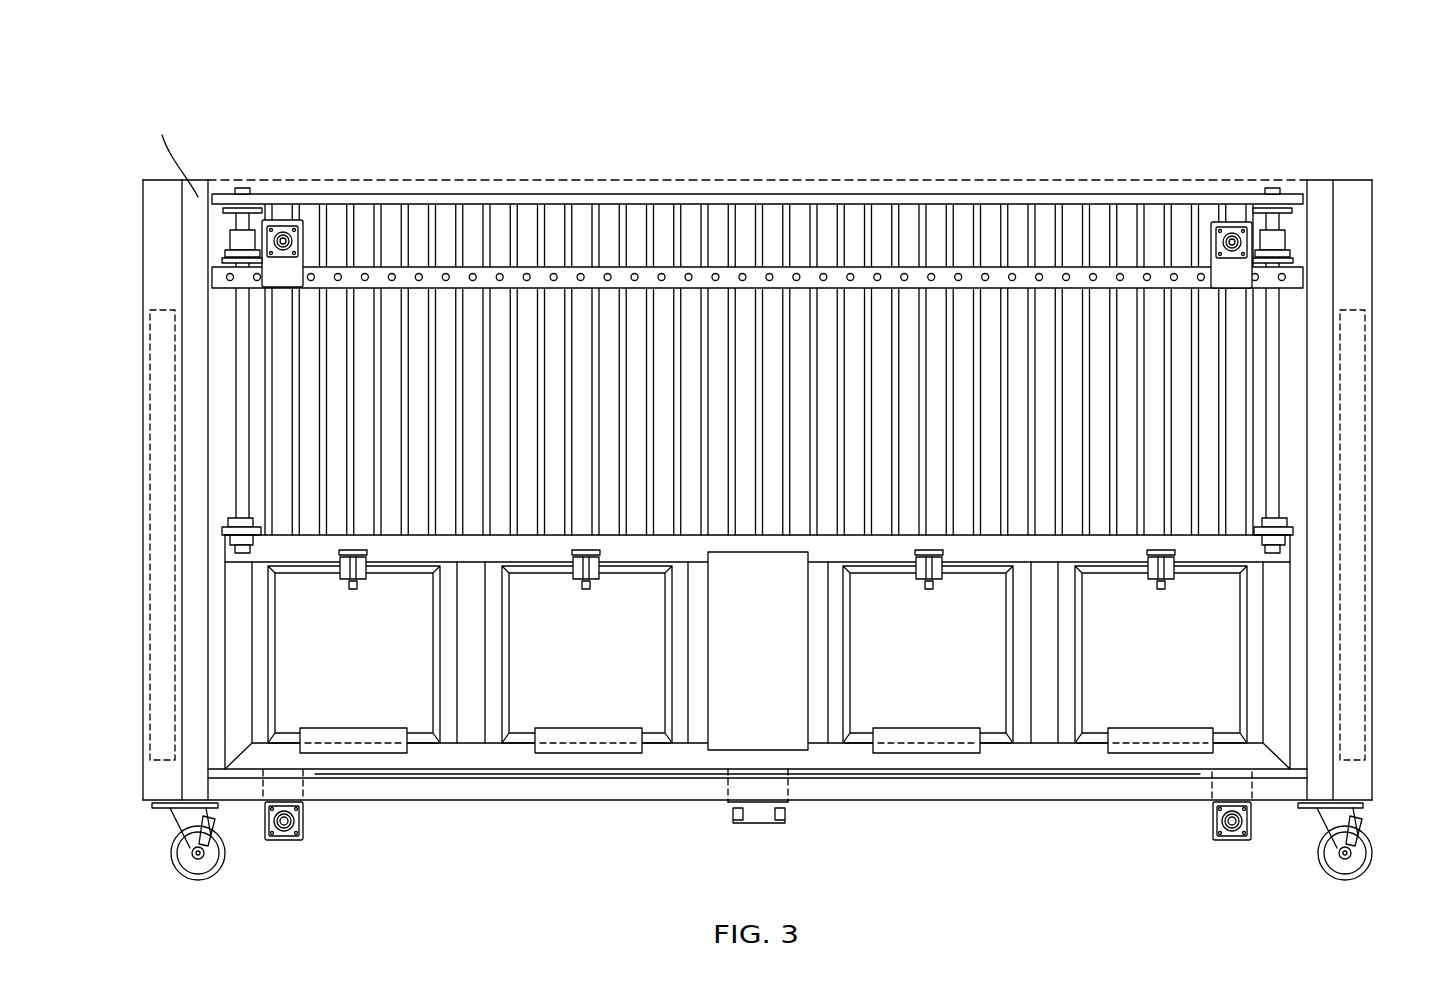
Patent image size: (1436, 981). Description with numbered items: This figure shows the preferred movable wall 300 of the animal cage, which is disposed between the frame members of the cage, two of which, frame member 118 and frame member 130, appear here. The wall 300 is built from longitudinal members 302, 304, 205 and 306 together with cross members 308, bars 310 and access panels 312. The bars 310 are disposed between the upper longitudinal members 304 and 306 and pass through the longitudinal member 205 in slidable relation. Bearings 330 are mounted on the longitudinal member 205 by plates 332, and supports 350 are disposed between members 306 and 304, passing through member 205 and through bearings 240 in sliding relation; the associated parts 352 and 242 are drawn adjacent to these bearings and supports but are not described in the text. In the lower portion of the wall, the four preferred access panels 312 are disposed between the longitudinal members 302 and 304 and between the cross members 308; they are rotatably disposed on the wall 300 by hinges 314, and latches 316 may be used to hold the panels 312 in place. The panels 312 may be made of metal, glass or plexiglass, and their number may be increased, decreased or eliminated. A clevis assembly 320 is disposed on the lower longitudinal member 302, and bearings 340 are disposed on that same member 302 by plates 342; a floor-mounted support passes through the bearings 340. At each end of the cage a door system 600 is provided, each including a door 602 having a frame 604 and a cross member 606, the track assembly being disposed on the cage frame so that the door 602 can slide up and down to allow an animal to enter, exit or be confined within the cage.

The wall 300 is at (866, 106).
The frame member 130 is at (1320, 200).
The door system 600 is at (128, 372).
The door 602 is at (1360, 648).
The frame 604 is at (160, 603).
The cross member 606 is at (160, 783).
The bars 310 is at (540, 237).
The longitudinal member 306 is at (1020, 202).
The longitudinal member 205 is at (672, 272).
The plates 332 is at (300, 233).
The bearings 330 is at (278, 228).
The jack nut assembly 352 is at (242, 207).
The supports 350 is at (240, 430).
The bearings 240 is at (237, 242).
The base plate 242 is at (237, 261).
The longitudinal member 304 is at (1102, 559).
The longitudinal member 302 is at (993, 755).
The cross members 308 is at (229, 675).
The frame member 118 is at (948, 792).
The access panels 312 is at (575, 675).
The hinges 314 is at (597, 740).
The latches 316 is at (597, 573).
The clevis assembly 320 is at (778, 825).
The plates 342 is at (302, 785).
The bearings 340 is at (283, 828).